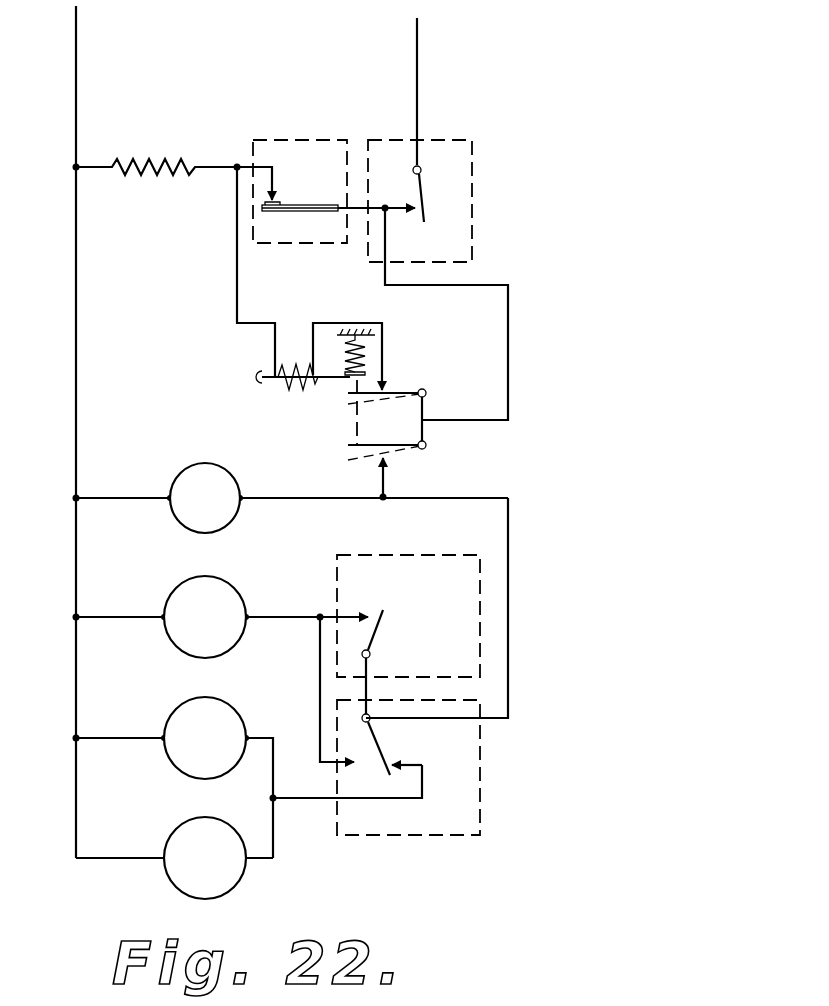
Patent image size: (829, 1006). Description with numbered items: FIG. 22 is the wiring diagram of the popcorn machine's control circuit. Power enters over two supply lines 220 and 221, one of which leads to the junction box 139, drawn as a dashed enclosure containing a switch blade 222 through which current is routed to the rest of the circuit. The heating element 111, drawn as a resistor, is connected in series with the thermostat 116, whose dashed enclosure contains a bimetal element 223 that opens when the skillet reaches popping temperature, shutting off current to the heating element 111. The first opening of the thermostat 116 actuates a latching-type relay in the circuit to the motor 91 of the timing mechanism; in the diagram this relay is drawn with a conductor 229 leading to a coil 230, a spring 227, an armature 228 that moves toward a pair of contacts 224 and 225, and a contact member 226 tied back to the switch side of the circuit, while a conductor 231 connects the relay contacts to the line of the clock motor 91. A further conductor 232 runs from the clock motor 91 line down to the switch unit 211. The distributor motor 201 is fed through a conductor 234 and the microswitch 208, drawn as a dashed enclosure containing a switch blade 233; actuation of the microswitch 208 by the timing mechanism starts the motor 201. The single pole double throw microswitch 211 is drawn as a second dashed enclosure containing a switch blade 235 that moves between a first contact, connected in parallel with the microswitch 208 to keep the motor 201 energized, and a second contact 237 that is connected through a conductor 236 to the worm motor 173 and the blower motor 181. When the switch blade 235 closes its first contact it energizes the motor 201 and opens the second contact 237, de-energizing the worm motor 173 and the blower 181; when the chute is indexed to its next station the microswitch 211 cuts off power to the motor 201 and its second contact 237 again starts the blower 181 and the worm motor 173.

The power supply line 220 is at (78, 27).
The power supply line 221 is at (420, 36).
The heating element 111 is at (158, 160).
The thermostat 116 is at (295, 140).
The bimetal element 223 is at (274, 196).
The junction box 139 is at (472, 157).
The switch blade 222 is at (422, 188).
The conductor 229 is at (275, 343).
The relay coil 230 is at (262, 383).
The spring 227 is at (362, 346).
The relay armature 228 is at (386, 378).
The contact 224 is at (398, 398).
The contact 225 is at (402, 447).
The contact member 226 is at (426, 410).
The conductor 231 is at (380, 482).
The motor 91 is at (214, 466).
The conductor 232 is at (508, 527).
The motor 201 is at (180, 584).
The microswitch 208 is at (348, 555).
The conductor 234 is at (347, 614).
The switch blade 233 is at (384, 633).
The single pole double throw microswitch 211 is at (480, 787).
The switch blade 235 is at (375, 740).
The contact 237 is at (400, 761).
The conductor 236 is at (332, 765).
The worm motor 173 is at (166, 722).
The blower 181 is at (170, 835).